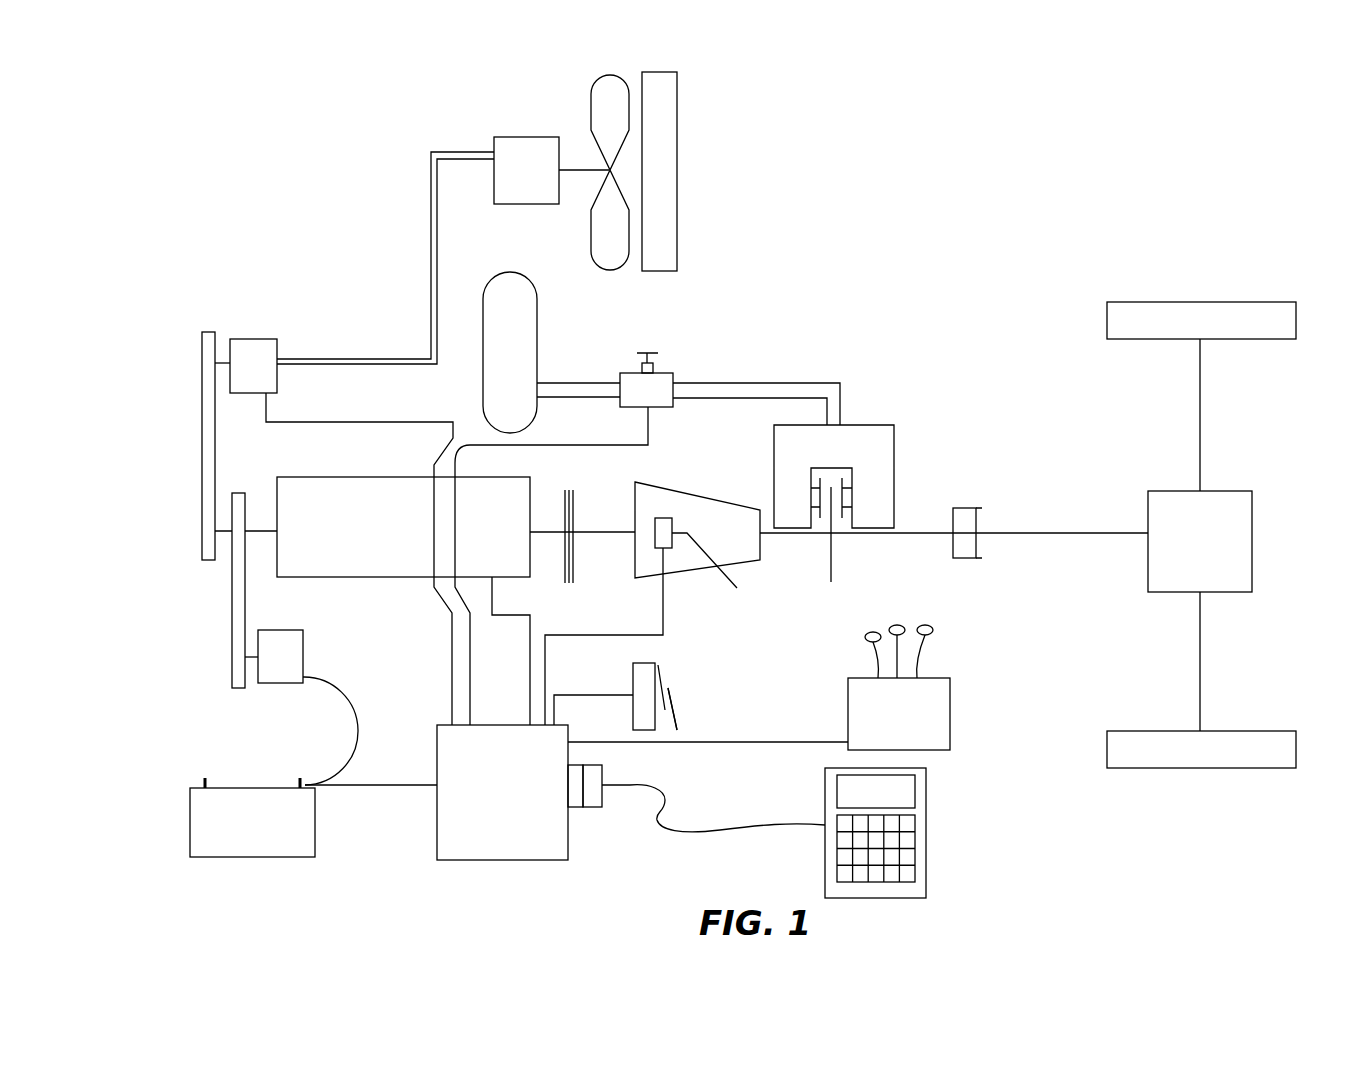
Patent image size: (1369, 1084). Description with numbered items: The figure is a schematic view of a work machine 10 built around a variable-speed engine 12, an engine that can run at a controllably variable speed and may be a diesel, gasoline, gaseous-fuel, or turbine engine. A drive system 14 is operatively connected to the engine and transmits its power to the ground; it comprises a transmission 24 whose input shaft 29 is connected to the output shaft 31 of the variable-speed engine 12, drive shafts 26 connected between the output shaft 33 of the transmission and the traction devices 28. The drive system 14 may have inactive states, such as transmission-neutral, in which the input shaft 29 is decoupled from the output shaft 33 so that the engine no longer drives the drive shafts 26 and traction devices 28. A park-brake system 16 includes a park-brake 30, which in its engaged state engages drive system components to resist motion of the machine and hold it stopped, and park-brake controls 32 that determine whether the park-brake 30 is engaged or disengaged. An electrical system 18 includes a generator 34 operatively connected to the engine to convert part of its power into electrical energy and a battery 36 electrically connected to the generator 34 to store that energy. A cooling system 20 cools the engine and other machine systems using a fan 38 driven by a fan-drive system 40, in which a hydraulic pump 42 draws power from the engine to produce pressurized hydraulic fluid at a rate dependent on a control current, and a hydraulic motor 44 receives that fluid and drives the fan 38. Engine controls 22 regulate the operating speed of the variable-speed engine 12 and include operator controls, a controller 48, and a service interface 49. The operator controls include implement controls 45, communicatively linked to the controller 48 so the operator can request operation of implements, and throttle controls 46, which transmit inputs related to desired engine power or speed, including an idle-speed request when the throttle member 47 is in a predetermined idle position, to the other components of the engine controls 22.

The machine 10 is at (785, 197).
The variable-speed engine 12 is at (403, 601).
The drive system 14 is at (948, 600).
The park-brake system 16 is at (770, 365).
The electrical system 18 is at (218, 745).
The cooling system 20 is at (253, 170).
The engine controls 22 is at (657, 840).
The transmission 24 is at (752, 563).
The drive shafts 26 is at (910, 533).
The traction devices 28 is at (1188, 302).
The input shaft 29 is at (602, 533).
The park-brake 30 is at (895, 455).
The output shaft 31 is at (545, 530).
The park-brake controls 32 is at (670, 373).
The output shaft 33 is at (785, 535).
The generator 34 is at (303, 650).
The battery 36 is at (313, 817).
The fan 38 is at (583, 85).
The fan-drive system 40 is at (345, 293).
The hydraulic pump 42 is at (278, 348).
The hydraulic motor 44 is at (497, 137).
The implement controls 45 is at (899, 687).
The throttle controls 46 is at (685, 697).
The throttle member 47 is at (677, 712).
The controller 48 is at (642, 792).
The service interface 49 is at (925, 850).